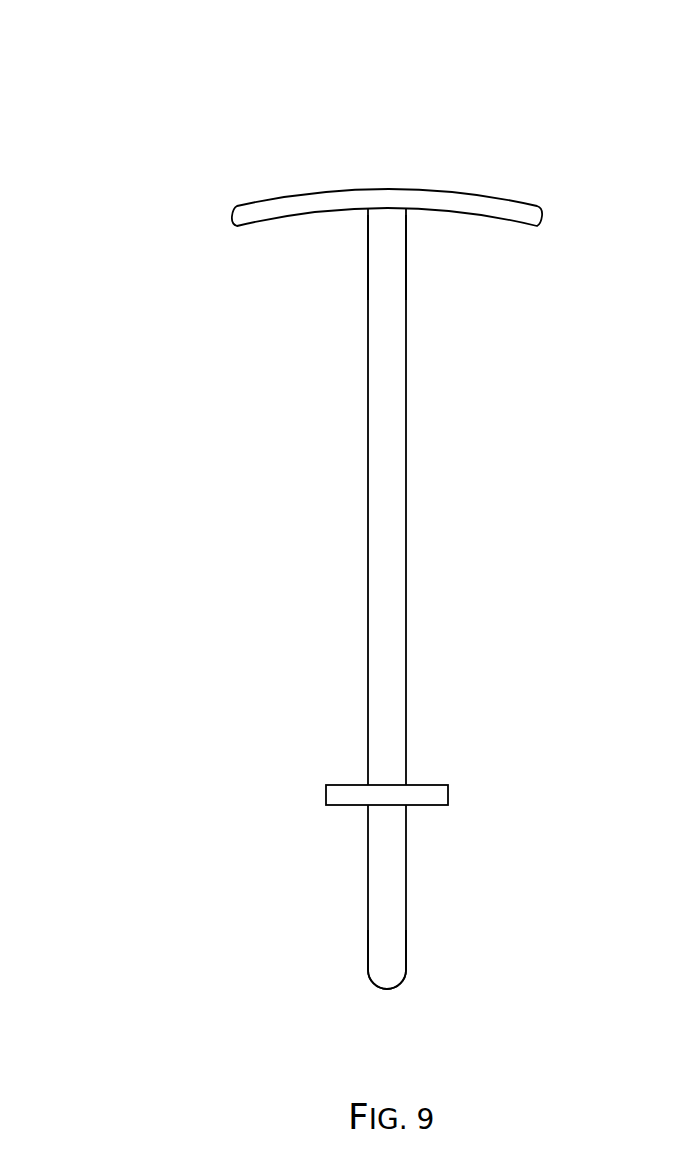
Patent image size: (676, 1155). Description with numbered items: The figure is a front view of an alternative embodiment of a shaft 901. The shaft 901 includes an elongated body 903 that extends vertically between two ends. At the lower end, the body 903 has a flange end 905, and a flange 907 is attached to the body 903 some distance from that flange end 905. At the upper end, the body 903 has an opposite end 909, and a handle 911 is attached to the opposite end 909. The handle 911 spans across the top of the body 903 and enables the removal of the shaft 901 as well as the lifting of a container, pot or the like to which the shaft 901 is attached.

The shaft 901 is at (148, 52).
The body 903 is at (368, 345).
The flange end 905 is at (362, 956).
The flange 907 is at (429, 785).
The opposite end 909 is at (363, 260).
The handle 911 is at (308, 193).